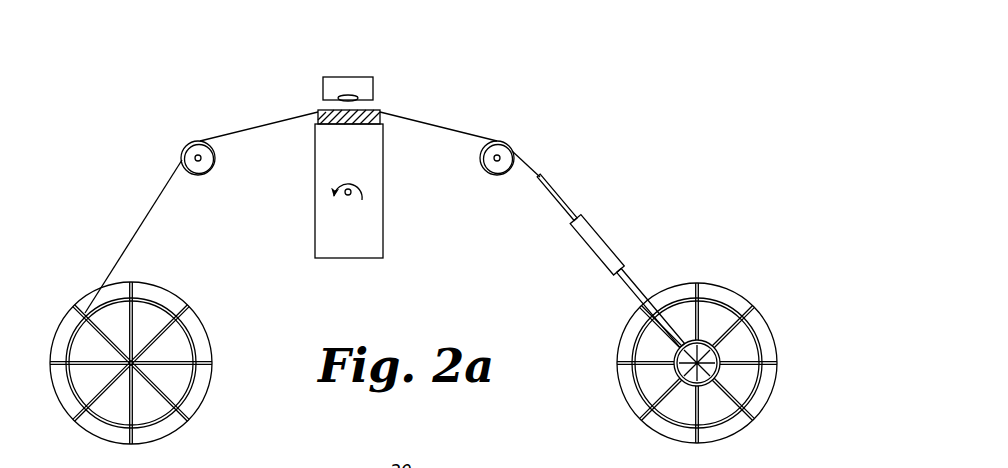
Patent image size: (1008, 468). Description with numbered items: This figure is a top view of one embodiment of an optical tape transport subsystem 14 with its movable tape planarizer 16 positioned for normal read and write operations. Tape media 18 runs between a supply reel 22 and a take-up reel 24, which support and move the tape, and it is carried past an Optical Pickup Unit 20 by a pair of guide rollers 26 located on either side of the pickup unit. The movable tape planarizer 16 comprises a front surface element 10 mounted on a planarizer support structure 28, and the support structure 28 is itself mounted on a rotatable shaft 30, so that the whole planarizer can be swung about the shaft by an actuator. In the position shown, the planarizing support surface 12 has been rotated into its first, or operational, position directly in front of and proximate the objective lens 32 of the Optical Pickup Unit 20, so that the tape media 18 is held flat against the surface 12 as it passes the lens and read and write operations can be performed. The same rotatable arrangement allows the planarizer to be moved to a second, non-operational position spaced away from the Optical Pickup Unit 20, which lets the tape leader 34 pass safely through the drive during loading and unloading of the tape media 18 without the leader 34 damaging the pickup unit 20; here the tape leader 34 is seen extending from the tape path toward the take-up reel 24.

The front surface element 10 is at (328, 110).
The planarizing support surface 12 is at (378, 109).
The optical tape transport subsystem 14 is at (586, 100).
The movable tape planarizer 16 is at (431, 200).
The tape media 18 is at (138, 222).
The Optical Pickup Unit 20 is at (351, 77).
The supply reel 22 is at (222, 362).
The take-up reel 24 is at (601, 362).
The guide rollers 26 is at (200, 176).
The planarizer support structure 28 is at (384, 192).
The rotatable shaft 30 is at (350, 197).
The objective lens 32 is at (345, 95).
The tape leader 34 is at (606, 233).